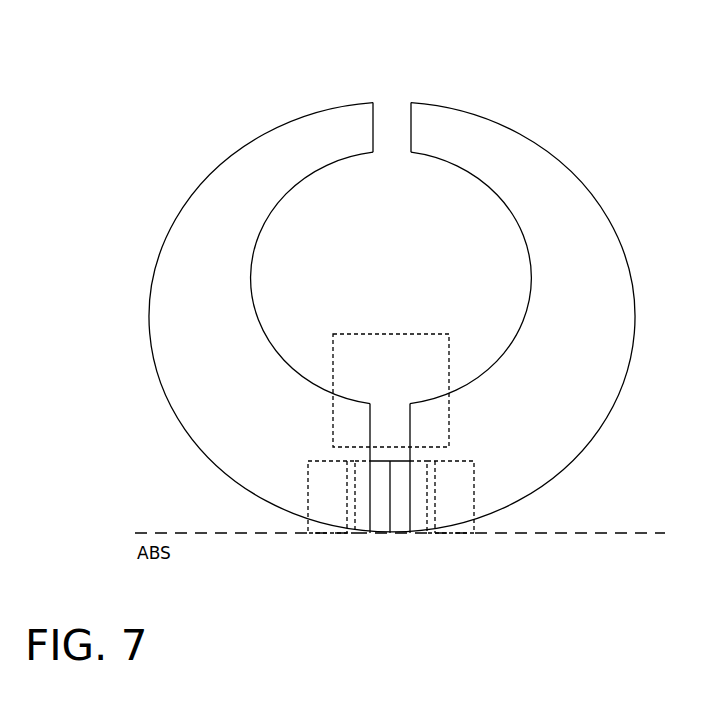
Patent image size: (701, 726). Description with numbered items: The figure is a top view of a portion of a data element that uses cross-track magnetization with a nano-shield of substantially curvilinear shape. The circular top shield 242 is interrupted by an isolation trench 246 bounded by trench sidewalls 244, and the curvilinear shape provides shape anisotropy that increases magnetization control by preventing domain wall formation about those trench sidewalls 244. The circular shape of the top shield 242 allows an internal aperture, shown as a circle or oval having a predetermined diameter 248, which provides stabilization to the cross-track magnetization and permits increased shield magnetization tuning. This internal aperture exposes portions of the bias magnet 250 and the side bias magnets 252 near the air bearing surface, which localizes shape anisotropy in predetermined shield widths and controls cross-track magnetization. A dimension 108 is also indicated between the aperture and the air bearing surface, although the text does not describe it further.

The distance between inner circle and ABS 108 is at (298, 392).
The nano-shield top shield 242 is at (392, 317).
The trench sidewalls 244 is at (373, 542).
The isolation trench 246 is at (394, 95).
The predetermined diameter 248 is at (523, 278).
The bias magnet 250 is at (391, 390).
The side bias magnets 252 is at (320, 544).